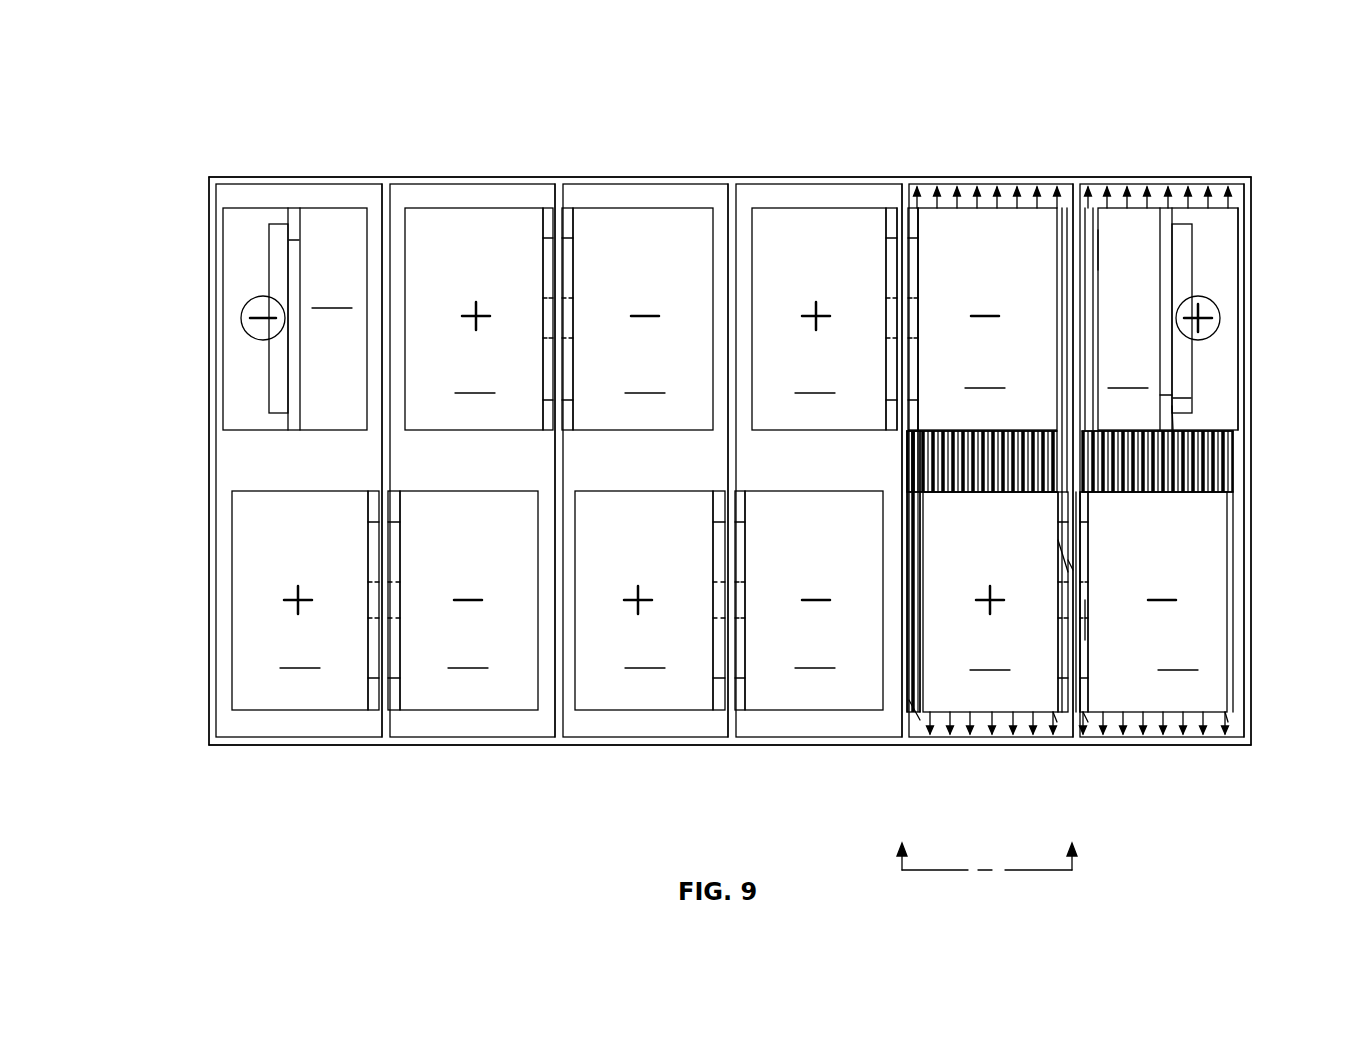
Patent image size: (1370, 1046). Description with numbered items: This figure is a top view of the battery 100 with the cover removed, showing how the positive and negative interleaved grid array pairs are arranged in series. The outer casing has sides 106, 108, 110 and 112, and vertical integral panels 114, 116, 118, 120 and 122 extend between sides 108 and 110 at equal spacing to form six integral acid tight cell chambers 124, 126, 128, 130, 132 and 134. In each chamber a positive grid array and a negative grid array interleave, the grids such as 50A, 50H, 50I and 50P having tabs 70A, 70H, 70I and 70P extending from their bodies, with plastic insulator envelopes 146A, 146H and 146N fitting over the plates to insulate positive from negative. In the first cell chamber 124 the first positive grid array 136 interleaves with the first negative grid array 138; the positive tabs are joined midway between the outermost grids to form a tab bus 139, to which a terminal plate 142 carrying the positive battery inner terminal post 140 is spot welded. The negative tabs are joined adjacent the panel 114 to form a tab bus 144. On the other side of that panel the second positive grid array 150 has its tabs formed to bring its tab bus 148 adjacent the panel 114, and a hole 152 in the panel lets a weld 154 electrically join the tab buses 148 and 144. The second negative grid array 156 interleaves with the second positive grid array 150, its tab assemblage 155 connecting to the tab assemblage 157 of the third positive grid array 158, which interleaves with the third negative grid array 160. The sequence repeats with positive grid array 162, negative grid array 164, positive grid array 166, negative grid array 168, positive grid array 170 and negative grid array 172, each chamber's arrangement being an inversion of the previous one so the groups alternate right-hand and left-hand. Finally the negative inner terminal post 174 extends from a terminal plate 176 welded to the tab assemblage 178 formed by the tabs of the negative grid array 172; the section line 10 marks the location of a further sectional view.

The battery 100 is at (198, 142).
The side 106 is at (1252, 467).
The side 108 is at (786, 746).
The side 110 is at (740, 178).
The side 112 is at (209, 425).
The vertical integral panel 114 is at (1069, 716).
The vertical integral panel 116 is at (900, 712).
The vertical integral panel 118 is at (730, 712).
The vertical integral panel 120 is at (558, 712).
The vertical integral panel 122 is at (383, 714).
The integral acid tight cell chamber 124 is at (1187, 173).
The integral acid tight cell chamber 126 is at (1012, 173).
The integral acid tight cell chamber 128 is at (844, 173).
The integral acid tight cell chamber 130 is at (660, 173).
The integral acid tight cell chamber 132 is at (490, 173).
The integral acid tight cell chamber 134 is at (322, 173).
The first positive grid array 136 is at (1162, 308).
The first negative grid array 138 is at (1154, 613).
The tab bus 139 is at (1192, 248).
The positive battery inner terminal post 140 is at (1220, 318).
The terminal plate 142 is at (1184, 400).
The tab bus 144 is at (1086, 536).
The plastic insulator envelope 146A is at (1055, 722).
The plastic insulator envelope 146H is at (1086, 726).
The plastic insulator envelope 146N is at (912, 722).
The tab bus 148 is at (1062, 537).
The second positive grid array 150 is at (995, 613).
The hole 152 is at (1077, 603).
The weld 154 is at (1086, 620).
The tab assemblage 155 is at (912, 279).
The second negative grid array 156 is at (984, 308).
The tab assemblage 157 is at (893, 270).
The third positive grid array 158 is at (824, 319).
The third negative grid array 160 is at (809, 600).
The positive grid array 162 is at (650, 600).
The negative grid array 164 is at (637, 319).
The positive grid array 166 is at (479, 319).
The negative grid array 168 is at (463, 600).
The positive grid array 170 is at (305, 600).
The negative grid array 172 is at (295, 319).
The negative inner terminal post 174 is at (241, 308).
The terminal plate 176 is at (276, 280).
The tab assemblage 178 is at (296, 250).
The grid 50A is at (1243, 262).
The grid 50H is at (1098, 250).
The grid 50I is at (1232, 566).
The grid 50P is at (925, 432).
The tab 70A is at (1173, 406).
The tab 70H is at (1172, 408).
The tab 70I is at (301, 384).
The tab 70P is at (283, 387).
The section line 10- 10 is at (988, 841).